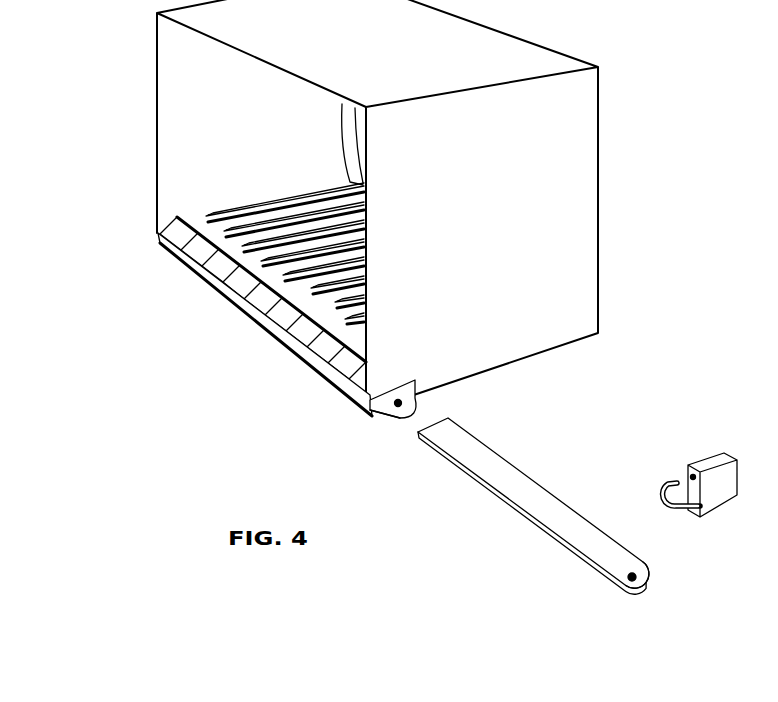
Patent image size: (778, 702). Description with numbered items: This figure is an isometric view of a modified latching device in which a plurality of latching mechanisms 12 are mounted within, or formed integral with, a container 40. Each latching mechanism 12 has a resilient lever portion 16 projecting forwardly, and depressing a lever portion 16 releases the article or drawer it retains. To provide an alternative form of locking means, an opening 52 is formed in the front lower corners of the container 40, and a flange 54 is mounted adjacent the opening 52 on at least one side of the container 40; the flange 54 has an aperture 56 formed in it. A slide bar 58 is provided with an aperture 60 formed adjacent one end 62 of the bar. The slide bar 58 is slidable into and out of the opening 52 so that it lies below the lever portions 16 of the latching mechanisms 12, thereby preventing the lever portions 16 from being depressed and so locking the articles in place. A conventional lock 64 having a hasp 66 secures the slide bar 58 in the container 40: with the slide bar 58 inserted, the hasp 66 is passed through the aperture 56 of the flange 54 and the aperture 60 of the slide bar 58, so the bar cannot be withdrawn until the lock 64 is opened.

The container 40 is at (157, 145).
The latching mechanisms 12 is at (222, 277).
The lever portion 16 is at (257, 307).
The opening 52 is at (400, 390).
The flange 54 is at (373, 418).
The aperture 56 is at (398, 406).
The slide bar 58 is at (502, 503).
The aperture 60 is at (628, 578).
The end 62 is at (648, 596).
The lock 64 is at (710, 460).
The hasp 66 is at (660, 486).